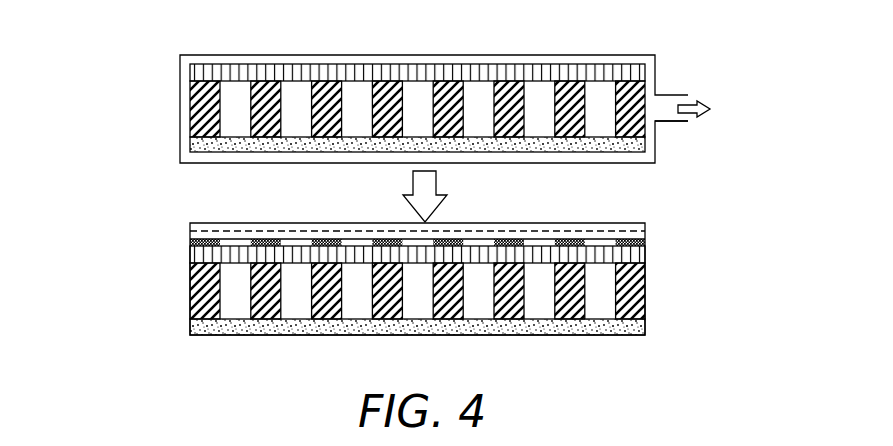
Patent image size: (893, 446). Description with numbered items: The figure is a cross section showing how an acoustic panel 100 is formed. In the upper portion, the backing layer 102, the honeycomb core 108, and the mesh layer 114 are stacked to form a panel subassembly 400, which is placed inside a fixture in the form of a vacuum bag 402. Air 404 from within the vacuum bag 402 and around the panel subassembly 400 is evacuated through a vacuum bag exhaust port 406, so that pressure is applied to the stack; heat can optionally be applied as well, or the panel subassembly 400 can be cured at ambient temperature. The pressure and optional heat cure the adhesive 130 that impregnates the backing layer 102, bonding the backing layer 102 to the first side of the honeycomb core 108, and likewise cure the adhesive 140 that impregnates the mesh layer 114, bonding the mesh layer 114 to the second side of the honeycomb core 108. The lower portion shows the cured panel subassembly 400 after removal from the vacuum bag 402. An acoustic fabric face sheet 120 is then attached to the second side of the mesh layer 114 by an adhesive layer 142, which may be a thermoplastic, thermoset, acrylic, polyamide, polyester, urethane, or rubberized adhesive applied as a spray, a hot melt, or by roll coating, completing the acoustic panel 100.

The acoustic panel 100 is at (183, 207).
The backing layer 102 is at (625, 142).
The honeycomb core 108 is at (205, 110).
The mesh layer 114 is at (413, 70).
The acoustic fabric face sheet 120 is at (278, 237).
The adhesive 130 is at (520, 141).
The adhesive 140 is at (543, 70).
The adhesive layer 142 is at (190, 243).
The panel subassembly 400 is at (184, 35).
The vacuum bag 402 is at (281, 55).
The air 404 is at (685, 100).
The vacuum bag exhaust port 406 is at (692, 135).